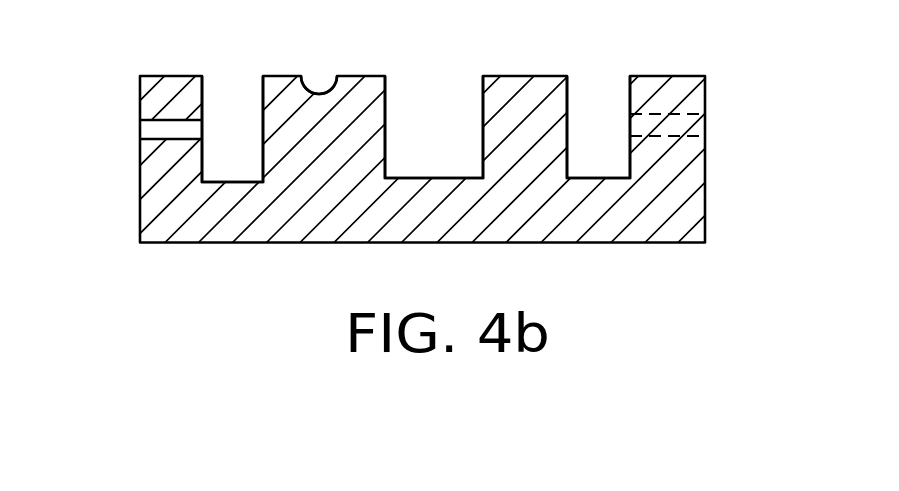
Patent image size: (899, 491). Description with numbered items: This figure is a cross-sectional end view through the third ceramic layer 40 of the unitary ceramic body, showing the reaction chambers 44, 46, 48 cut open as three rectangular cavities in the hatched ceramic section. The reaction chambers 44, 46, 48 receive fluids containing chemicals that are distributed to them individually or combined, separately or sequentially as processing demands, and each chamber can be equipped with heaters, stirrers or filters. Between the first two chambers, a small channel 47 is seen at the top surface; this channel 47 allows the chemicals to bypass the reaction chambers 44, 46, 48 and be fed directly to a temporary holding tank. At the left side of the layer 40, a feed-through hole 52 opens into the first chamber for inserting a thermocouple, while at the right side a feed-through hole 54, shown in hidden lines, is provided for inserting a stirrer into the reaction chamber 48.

The third ceramic layer 40 is at (717, 200).
The reaction chamber 44 is at (238, 93).
The reaction chamber 46 is at (453, 88).
The channel 47 is at (320, 83).
The reaction chamber 48 is at (602, 88).
The feed-through hole 52 is at (160, 129).
The feed-through hole 54 is at (682, 113).